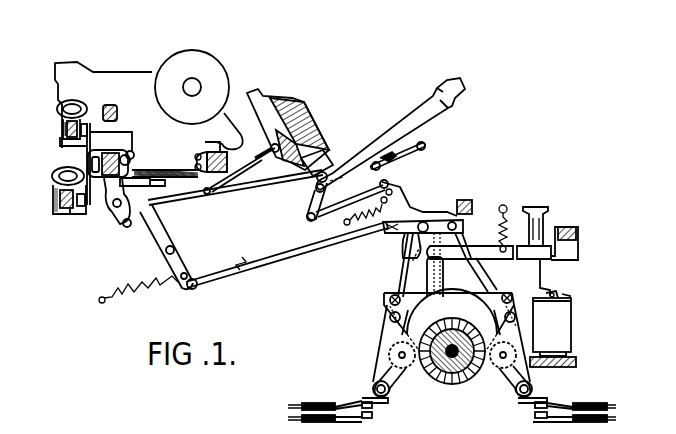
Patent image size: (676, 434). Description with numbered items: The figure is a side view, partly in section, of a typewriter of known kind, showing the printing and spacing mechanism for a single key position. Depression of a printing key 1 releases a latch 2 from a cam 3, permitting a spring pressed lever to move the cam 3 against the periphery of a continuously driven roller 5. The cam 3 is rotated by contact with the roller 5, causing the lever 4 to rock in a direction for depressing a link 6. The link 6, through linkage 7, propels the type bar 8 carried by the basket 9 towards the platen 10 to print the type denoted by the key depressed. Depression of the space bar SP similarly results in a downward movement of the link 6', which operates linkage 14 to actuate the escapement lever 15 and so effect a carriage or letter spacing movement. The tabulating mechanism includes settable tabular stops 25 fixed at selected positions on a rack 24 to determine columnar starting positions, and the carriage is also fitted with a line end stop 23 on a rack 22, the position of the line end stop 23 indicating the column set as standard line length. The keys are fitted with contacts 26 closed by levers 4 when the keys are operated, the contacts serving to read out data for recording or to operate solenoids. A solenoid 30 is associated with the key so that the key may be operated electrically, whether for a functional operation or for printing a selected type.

The key 1 is at (535, 207).
The latch 2 is at (392, 326).
The cam 3 is at (389, 361).
The lever 4 is at (390, 323).
The roller 5 is at (442, 386).
The link 6 is at (431, 265).
The link 6' is at (396, 265).
The linkage 7 is at (343, 214).
The type bar 8 is at (418, 122).
The basket 9 is at (325, 158).
The platen 10 is at (207, 60).
The linkage 14 is at (272, 262).
The escapement lever 15 is at (118, 222).
The rack 22 is at (68, 212).
The line end stop 23 is at (52, 172).
The rack 24 is at (63, 140).
The tabular stops 25 is at (59, 115).
The contacts 26 is at (378, 412).
The solenoid 30 is at (566, 322).
The space bar SP is at (574, 227).